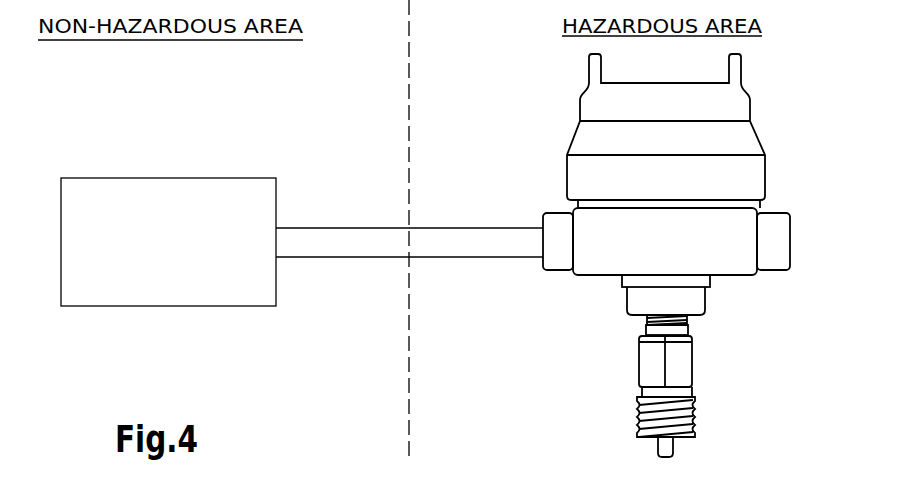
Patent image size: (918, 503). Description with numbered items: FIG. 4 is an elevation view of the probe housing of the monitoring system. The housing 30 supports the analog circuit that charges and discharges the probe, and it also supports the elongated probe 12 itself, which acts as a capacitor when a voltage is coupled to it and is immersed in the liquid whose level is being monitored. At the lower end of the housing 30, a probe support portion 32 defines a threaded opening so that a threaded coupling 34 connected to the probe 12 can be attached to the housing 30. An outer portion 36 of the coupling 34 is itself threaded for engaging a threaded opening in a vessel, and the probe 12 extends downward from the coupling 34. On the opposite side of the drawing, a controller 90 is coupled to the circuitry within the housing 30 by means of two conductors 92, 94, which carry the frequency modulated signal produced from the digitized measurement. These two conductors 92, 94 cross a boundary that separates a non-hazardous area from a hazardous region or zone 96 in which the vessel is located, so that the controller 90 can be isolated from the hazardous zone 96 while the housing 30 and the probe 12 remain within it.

The controller 90 is at (135, 205).
The conductor 92 is at (322, 228).
The conductor 94 is at (333, 257).
The hazardous region or zone 96 is at (485, 143).
The housing 30 is at (602, 248).
The probe support portion 32 is at (695, 305).
The threaded coupling 34 is at (650, 363).
The outer portion 36 is at (678, 415).
The probe 12 is at (658, 445).